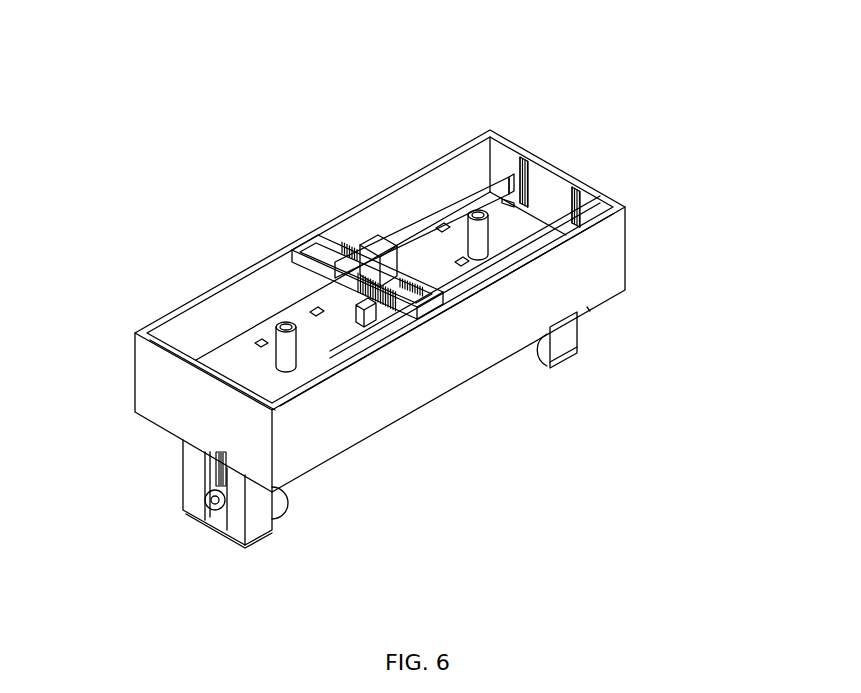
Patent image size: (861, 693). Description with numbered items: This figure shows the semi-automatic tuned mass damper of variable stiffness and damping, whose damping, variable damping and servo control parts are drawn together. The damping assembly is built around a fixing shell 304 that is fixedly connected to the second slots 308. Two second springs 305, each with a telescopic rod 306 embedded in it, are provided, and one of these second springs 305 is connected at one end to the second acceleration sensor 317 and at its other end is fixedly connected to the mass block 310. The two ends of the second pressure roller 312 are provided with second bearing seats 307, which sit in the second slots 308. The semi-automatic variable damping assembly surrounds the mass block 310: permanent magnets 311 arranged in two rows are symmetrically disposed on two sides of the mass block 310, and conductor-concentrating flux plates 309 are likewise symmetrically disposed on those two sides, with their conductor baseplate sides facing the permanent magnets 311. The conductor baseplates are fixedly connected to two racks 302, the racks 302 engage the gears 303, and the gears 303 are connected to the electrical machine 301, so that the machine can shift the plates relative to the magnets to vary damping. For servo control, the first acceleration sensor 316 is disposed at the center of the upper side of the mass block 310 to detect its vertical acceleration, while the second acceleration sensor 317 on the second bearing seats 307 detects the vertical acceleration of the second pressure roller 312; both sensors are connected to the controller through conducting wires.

The electrical machine 301 is at (355, 233).
The racks 302 is at (365, 270).
The gears 303 is at (372, 303).
The fixing shell 304 is at (232, 308).
The second springs 305 is at (197, 447).
The telescopic rods 306 is at (222, 462).
The second acceleration sensor 317 is at (222, 480).
The second bearing seats 307 is at (213, 502).
The second slots 308 is at (235, 512).
The conductor-concentrating flux plates 309 is at (488, 197).
The mass block 310 is at (528, 237).
The permanent magnets 311 is at (493, 272).
The first acceleration sensor 316 is at (405, 335).
The second pressure roller 312 is at (433, 407).